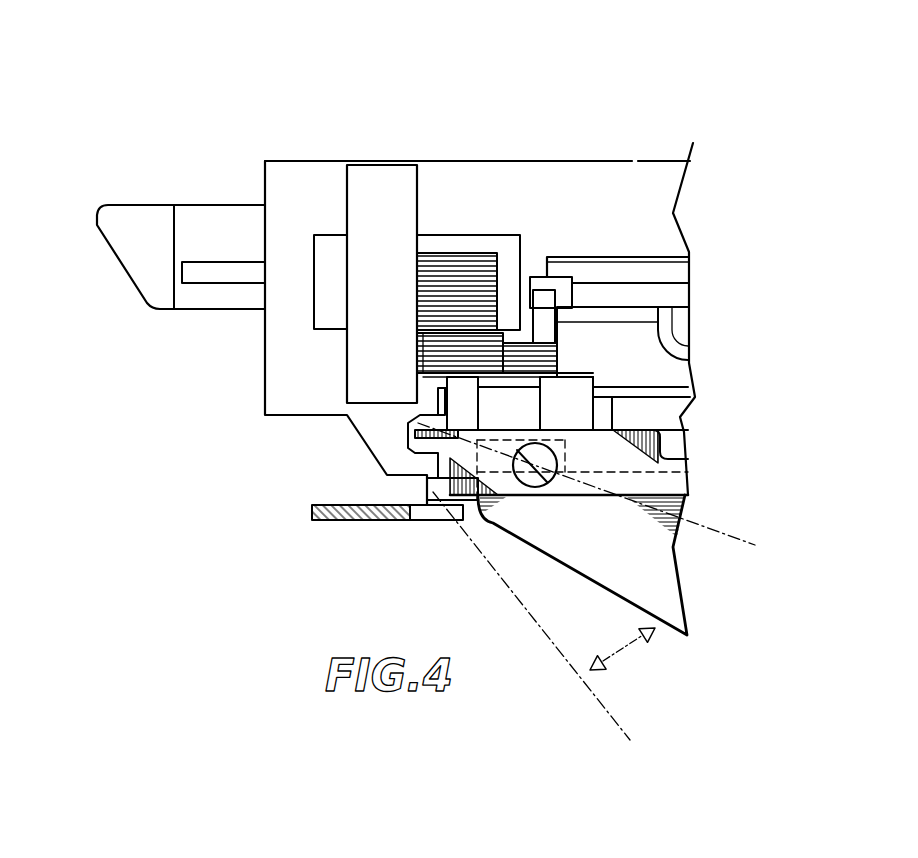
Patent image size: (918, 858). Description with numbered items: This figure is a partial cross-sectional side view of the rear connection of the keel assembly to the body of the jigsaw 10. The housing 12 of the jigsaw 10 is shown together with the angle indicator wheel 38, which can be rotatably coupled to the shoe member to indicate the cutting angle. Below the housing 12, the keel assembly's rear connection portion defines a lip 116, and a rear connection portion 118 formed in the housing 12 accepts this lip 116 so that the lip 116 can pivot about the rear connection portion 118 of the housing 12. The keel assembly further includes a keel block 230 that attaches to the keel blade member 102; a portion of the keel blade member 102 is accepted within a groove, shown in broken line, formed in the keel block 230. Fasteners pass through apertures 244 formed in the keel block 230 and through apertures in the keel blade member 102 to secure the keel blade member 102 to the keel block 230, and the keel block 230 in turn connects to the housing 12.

The jigsaw 10 is at (646, 77).
The housing 12 is at (627, 177).
The angle indicator wheel 38 is at (380, 182).
The keel blade member 102 is at (624, 560).
The lip 116 is at (458, 432).
The rear connection portion 118 is at (330, 445).
The keel block 230 is at (672, 482).
The apertures 244 is at (563, 463).